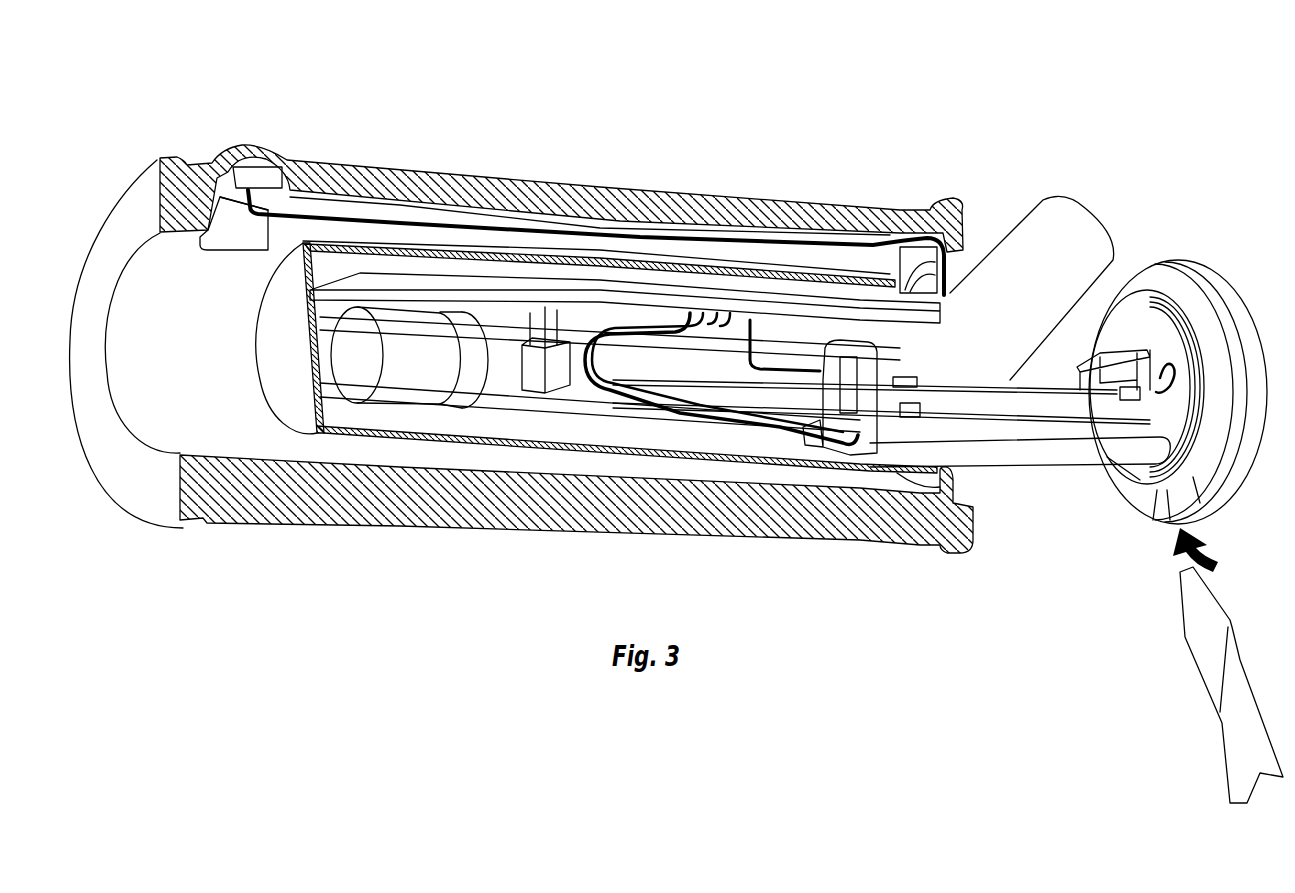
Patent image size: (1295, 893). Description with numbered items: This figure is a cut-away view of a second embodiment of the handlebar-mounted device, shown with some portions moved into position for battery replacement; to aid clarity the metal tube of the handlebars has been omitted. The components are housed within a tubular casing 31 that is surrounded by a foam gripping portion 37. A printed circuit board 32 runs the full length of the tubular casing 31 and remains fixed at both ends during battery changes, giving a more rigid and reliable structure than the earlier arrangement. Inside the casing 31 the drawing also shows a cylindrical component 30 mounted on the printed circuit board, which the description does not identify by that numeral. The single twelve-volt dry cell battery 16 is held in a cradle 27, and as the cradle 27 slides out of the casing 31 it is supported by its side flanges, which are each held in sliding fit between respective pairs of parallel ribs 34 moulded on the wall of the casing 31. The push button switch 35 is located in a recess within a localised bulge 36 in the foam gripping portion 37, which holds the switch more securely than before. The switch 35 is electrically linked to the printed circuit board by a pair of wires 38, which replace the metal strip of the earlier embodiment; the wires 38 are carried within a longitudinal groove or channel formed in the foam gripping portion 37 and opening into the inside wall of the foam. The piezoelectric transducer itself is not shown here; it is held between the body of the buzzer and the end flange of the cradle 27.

The battery 16 is at (1090, 207).
The cradle 27 is at (1033, 462).
The motor 30 is at (380, 397).
The tubular casing 31 is at (290, 417).
The printed circuit board 32 is at (143, 436).
The parallel ribs 34 is at (533, 417).
The push button switch 35 is at (250, 148).
The localised bulge 36 is at (230, 142).
The foam gripping portion 37 is at (677, 538).
The wires 38 is at (558, 240).